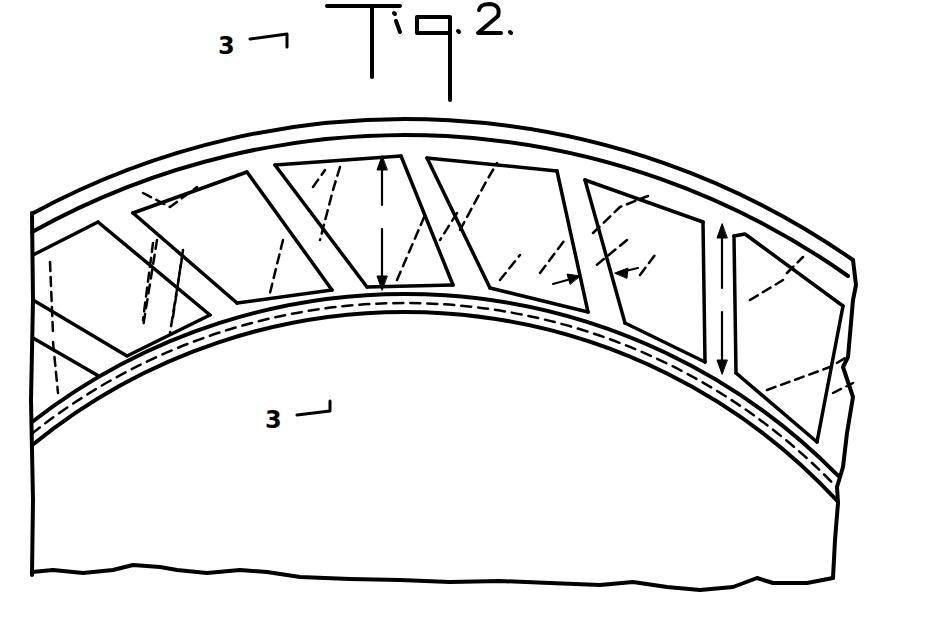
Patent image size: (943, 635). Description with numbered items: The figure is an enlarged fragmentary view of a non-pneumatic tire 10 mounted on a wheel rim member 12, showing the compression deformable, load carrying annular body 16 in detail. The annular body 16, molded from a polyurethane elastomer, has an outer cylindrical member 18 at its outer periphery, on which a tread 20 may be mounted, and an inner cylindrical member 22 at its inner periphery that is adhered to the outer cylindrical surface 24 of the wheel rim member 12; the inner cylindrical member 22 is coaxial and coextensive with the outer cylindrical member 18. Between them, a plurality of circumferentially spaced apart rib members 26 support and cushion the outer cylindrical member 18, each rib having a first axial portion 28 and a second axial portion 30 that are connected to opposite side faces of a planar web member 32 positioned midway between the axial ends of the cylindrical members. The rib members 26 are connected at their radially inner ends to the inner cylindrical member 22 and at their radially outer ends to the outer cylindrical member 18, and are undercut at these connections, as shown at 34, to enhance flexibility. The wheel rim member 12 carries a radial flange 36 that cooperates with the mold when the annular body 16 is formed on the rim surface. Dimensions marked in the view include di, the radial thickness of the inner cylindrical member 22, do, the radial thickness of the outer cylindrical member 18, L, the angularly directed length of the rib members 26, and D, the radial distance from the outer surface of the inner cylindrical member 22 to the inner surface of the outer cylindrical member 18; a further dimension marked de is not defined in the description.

The tire 10 is at (836, 184).
The wheel rim member 12 is at (686, 523).
The annular body 16 is at (360, 135).
The outer cylindrical member 18 is at (573, 168).
The tread 20 is at (455, 119).
The inner cylindrical member 22 is at (259, 305).
The outer cylindrical surface 24 is at (482, 318).
The rib members 26 is at (142, 182).
The first axial portion 28 is at (563, 230).
The second axial portion 30 is at (316, 223).
The web member 32 is at (117, 302).
The undercut 34 is at (43, 257).
The radial flange 36 is at (98, 387).
The radial distance D is at (381, 223).
The angularly directed length L is at (718, 299).
The wall spacing de is at (595, 282).
The radial thickness of inner cylindrical member di is at (620, 346).
The radial thickness of outer cylindrical member do is at (678, 210).